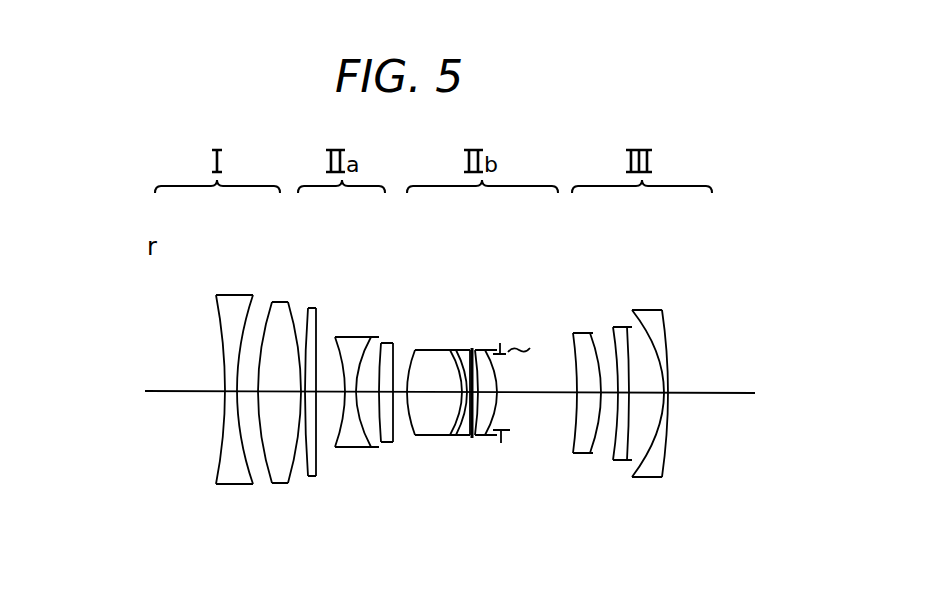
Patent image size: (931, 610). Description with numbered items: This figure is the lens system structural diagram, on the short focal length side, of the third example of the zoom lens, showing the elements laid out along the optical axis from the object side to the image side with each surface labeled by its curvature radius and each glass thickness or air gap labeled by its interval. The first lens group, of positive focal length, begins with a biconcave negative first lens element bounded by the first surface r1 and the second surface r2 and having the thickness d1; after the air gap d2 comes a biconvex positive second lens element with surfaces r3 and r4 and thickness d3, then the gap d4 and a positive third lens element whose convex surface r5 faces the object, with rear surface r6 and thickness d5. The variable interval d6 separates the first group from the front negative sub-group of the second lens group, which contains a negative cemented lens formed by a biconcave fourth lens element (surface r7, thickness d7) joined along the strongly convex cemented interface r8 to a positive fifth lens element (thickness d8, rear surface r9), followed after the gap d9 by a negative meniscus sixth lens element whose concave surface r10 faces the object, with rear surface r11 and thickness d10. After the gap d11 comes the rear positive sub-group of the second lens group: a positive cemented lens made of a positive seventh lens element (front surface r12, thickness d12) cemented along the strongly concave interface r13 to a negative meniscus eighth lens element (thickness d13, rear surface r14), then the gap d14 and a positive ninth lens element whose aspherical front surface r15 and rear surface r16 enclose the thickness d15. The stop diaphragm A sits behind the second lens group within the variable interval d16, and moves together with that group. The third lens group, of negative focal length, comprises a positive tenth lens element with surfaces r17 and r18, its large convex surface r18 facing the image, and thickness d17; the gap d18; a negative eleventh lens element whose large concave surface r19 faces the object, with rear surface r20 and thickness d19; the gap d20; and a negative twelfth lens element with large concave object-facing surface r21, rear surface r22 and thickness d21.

The curvature radius of first lens surface r1 is at (217, 310).
The curvature radius of second lens surface r2 is at (247, 312).
The curvature radius of third lens surface r3 is at (272, 302).
The curvature radius of fourth lens surface r4 is at (289, 305).
The curvature radius of fifth lens surface r5 is at (308, 310).
The curvature radius of sixth lens surface r6 is at (317, 308).
The curvature radius of seventh lens surface r7 is at (336, 338).
The curvature radius of eighth lens surface r8 is at (364, 345).
The curvature radius of ninth lens surface r9 is at (380, 343).
The curvature radius of tenth lens surface r10 is at (395, 346).
The curvature radius of eleventh lens surface r11 is at (415, 351).
The curvature radius of twelfth lens surface r12 is at (441, 351).
The curvature radius of thirteenth lens surface r13 is at (475, 352).
The curvature radius of fourteenth lens surface r14 is at (480, 352).
The curvature radius of fifteenth lens surface r15 is at (483, 352).
The curvature radius of sixteenth lens surface r16 is at (490, 352).
The curvature radius of seventeenth lens surface r17 is at (572, 335).
The curvature radius of eighteenth lens surface r18 is at (594, 334).
The curvature radius of nineteenth lens surface r19 is at (615, 328).
The curvature radius of twentieth lens surface r20 is at (627, 326).
The curvature radius of twenty-first lens surface r21 is at (633, 312).
The curvature radius of twenty-second lens surface r22 is at (666, 336).
The thickness of first lens element d1 is at (228, 425).
The interval between first and second lens elements d2 is at (252, 450).
The thickness of second lens element d3 is at (283, 422).
The interval between second and third lens elements d4 is at (298, 443).
The thickness of third lens element d5 is at (312, 442).
The interval between first and second lens groups d6 is at (330, 455).
The thickness of fourth lens element d7 is at (346, 448).
The thickness of fifth lens element d8 is at (368, 428).
The interval between fifth and sixth lens elements d9 is at (389, 443).
The thickness of sixth lens element d10 is at (398, 440).
The interval between lens groups IIa and IIb d11 is at (431, 437).
The thickness of seventh lens element d12 is at (466, 437).
The thickness of eighth lens element d13 is at (486, 437).
The interval between eighth and ninth lens elements d14 is at (490, 438).
The thickness of ninth lens element d15 is at (522, 398).
The interval between second and third lens groups d16 is at (522, 405).
The thickness of tenth lens element d17 is at (586, 454).
The interval between tenth and eleventh lens elements d18 is at (606, 444).
The thickness of eleventh lens element d19 is at (617, 461).
The interval between eleventh and twelfth lens elements d20 is at (632, 466).
The thickness of twelfth lens element d21 is at (663, 438).
The stop diaphragm A is at (513, 388).